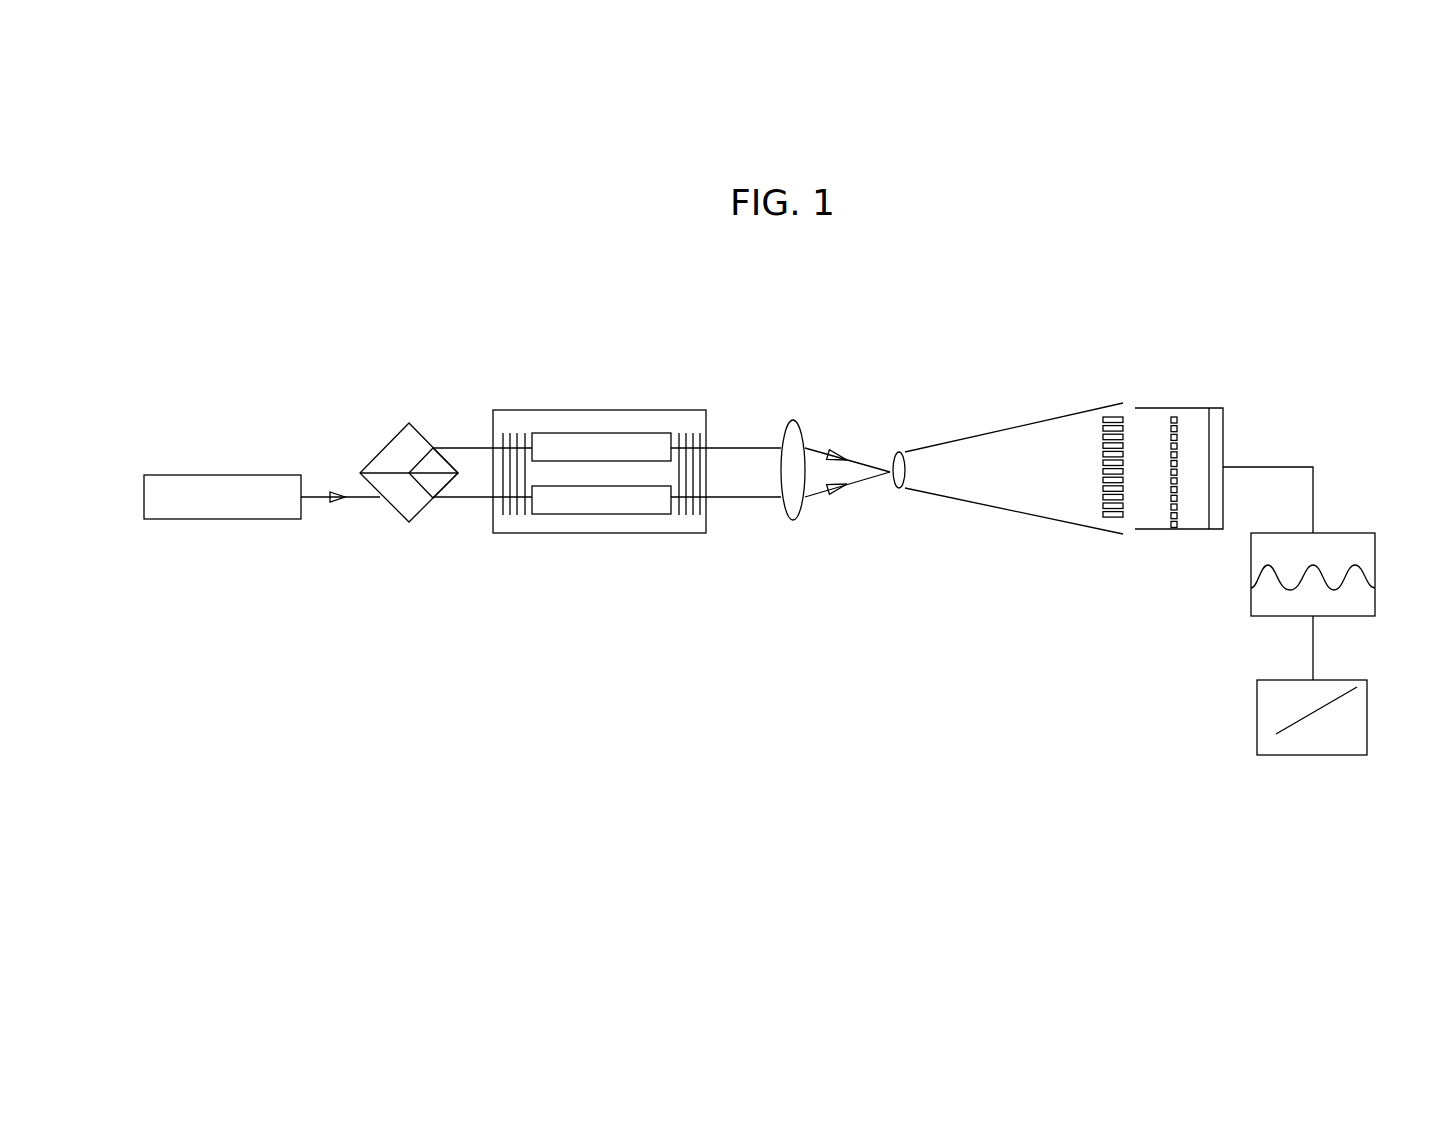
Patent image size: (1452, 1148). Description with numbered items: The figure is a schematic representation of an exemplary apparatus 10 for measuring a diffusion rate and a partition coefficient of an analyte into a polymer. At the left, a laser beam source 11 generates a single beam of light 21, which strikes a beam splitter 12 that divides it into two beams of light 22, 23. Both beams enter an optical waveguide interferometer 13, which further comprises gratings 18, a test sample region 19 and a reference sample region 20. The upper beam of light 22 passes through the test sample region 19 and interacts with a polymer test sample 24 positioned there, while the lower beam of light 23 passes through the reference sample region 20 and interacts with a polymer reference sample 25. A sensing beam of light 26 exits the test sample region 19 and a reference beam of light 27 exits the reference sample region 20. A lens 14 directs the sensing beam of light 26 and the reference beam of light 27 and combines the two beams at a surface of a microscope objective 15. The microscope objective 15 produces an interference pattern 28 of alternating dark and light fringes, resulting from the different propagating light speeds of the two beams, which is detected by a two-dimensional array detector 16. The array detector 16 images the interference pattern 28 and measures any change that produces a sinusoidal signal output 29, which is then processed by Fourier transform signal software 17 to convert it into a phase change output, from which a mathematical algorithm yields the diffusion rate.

The apparatus 10 is at (265, 373).
The laser beam source 11 is at (200, 565).
The beam splitter 12 is at (380, 500).
The optical waveguide interferometer 13 is at (525, 540).
The lens 14 is at (806, 424).
The microscope objective 15 is at (898, 492).
The 2D array detector 16 is at (1182, 394).
The Fourier transform signal software 17 is at (1255, 739).
The gratings 18 is at (507, 420).
The test sample region 19 is at (614, 420).
The reference sample region 20 is at (628, 516).
The single beam of light 21 is at (315, 492).
The beam of light 22 is at (450, 440).
The beam of light 23 is at (477, 500).
The polymer test sample 24 is at (577, 433).
The polymer reference sample 25 is at (583, 514).
The sensing beam of light 26 is at (737, 446).
The reference beam of light 27 is at (745, 500).
The interference pattern 28 is at (1093, 506).
The sinusoidal signal output 29 is at (1380, 575).